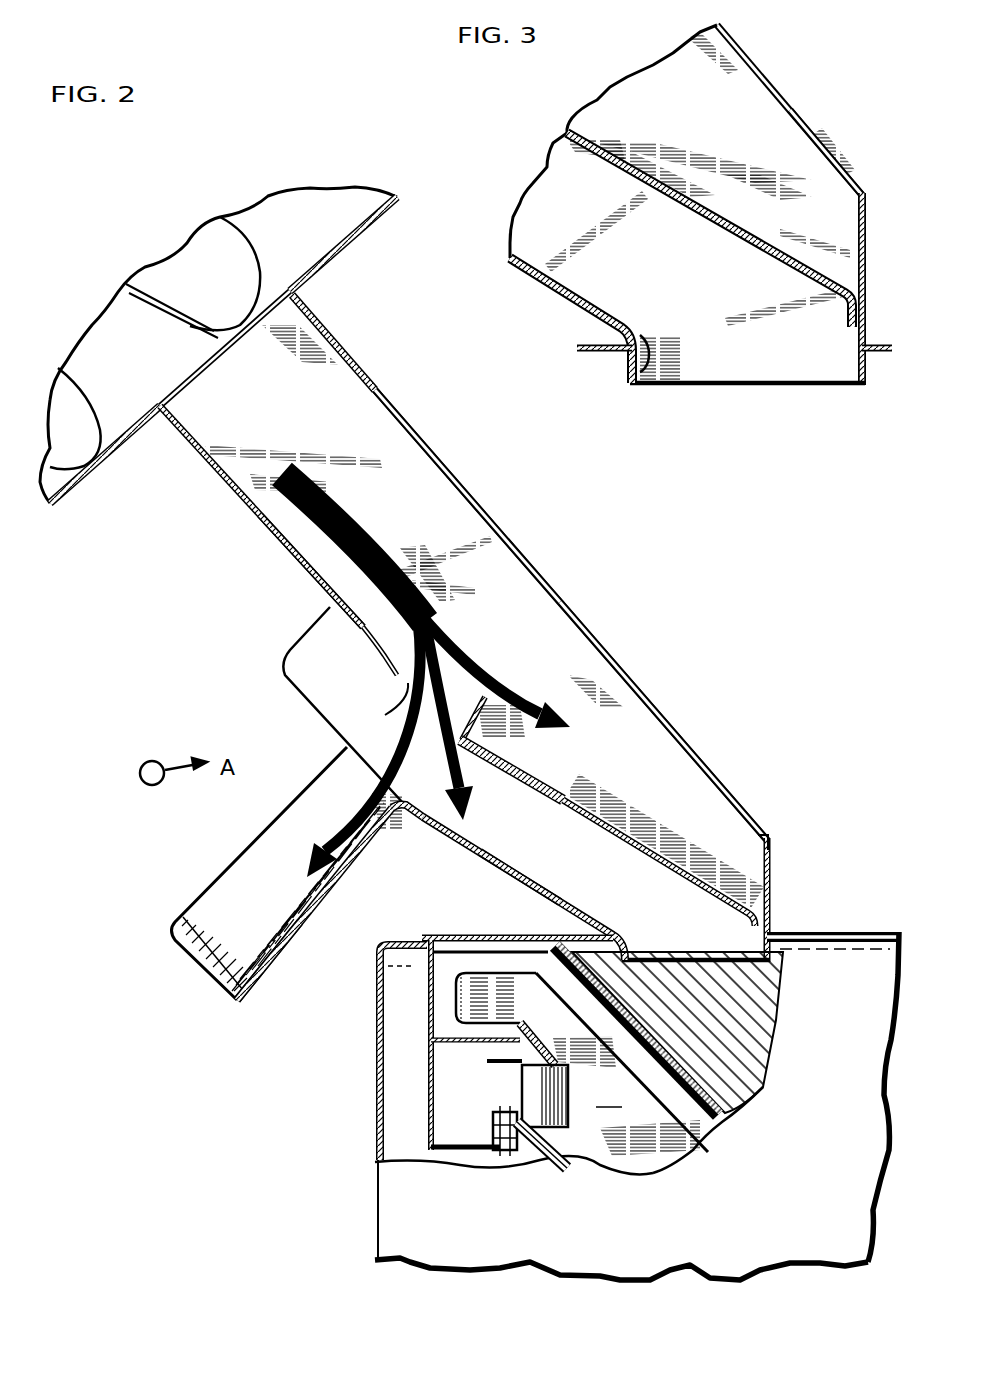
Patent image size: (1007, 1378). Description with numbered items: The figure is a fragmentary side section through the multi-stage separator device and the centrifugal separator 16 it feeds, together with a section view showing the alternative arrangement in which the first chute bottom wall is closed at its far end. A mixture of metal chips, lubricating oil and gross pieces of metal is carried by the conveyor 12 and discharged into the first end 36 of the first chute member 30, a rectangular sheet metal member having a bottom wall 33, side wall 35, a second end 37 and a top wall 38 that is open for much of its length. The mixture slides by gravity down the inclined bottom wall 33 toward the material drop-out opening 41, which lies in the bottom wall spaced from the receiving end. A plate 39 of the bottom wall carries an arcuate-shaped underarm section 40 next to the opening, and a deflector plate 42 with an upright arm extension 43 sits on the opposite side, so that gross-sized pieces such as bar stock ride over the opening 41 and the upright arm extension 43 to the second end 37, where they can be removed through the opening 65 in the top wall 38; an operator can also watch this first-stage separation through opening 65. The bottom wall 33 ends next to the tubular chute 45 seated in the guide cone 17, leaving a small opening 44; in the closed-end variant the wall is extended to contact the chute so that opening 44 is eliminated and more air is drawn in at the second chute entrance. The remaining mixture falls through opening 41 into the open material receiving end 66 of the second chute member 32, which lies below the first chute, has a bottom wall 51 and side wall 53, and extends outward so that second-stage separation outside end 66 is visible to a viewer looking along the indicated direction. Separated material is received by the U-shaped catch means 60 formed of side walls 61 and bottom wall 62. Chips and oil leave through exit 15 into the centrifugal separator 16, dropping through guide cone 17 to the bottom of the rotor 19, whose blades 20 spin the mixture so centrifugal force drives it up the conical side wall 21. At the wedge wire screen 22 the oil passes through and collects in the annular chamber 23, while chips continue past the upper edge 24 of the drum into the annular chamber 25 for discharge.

In FIG. 2, the conveyor 12 is at (355, 228).
In FIG. 2, the exit 15 is at (755, 1012).
In FIG. 2, the centrifugal separator 16 is at (840, 935).
In FIG. 3, the centrifugal separator 16 is at (605, 358).
In FIG. 2, the guide cone 17 is at (765, 1025).
In FIG. 2, the rotor 19 is at (568, 1170).
In FIG. 2, the blades 20 is at (569, 1052).
In FIG. 2, the conical side wall 21 is at (540, 1170).
In FIG. 2, the wedge wire screen 22 is at (522, 1084).
In FIG. 2, the annular chamber 23 is at (466, 1160).
In FIG. 2, the upper edge 24 is at (518, 1030).
In FIG. 2, the annular chamber 25 is at (438, 1012).
In FIG. 2, the first chute member 30 is at (450, 507).
In FIG. 3, the first chute member 30 is at (733, 105).
In FIG. 2, the second chute member 32 is at (498, 862).
In FIG. 3, the second chute member 32 is at (540, 214).
In FIG. 2, the bottom wall 33 is at (195, 448).
In FIG. 3, the bottom wall 33 is at (765, 245).
In FIG. 2, the side wall 35 is at (380, 396).
In FIG. 2, the first end 36 is at (175, 395).
In FIG. 2, the second end 37 is at (760, 845).
In FIG. 2, the top wall 38 is at (345, 342).
In FIG. 2, the plate 39 is at (292, 566).
In FIG. 2, the arcuate-shaped underarm section 40 is at (368, 660).
In FIG. 2, the material drop-out opening 41 is at (400, 700).
In FIG. 2, the deflector plate 42 is at (523, 772).
In FIG. 2, the upright arm extension 43 is at (495, 708).
In FIG. 2, the small opening 44 is at (772, 875).
In FIG. 2, the tubular chute 45 is at (772, 862).
In FIG. 3, the tubular chute 45 is at (864, 248).
In FIG. 2, the bottom wall 51 is at (550, 892).
In FIG. 3, the bottom wall 51 is at (548, 285).
In FIG. 2, the side wall 53 is at (298, 698).
In FIG. 2, the catch means 60 is at (270, 978).
In FIG. 2, the side walls 61 is at (205, 950).
In FIG. 2, the bottom wall 62 is at (345, 898).
In FIG. 2, the opening 65 is at (690, 737).
In FIG. 3, the opening 65 is at (810, 124).
In FIG. 2, the material receiving end 66 is at (430, 812).